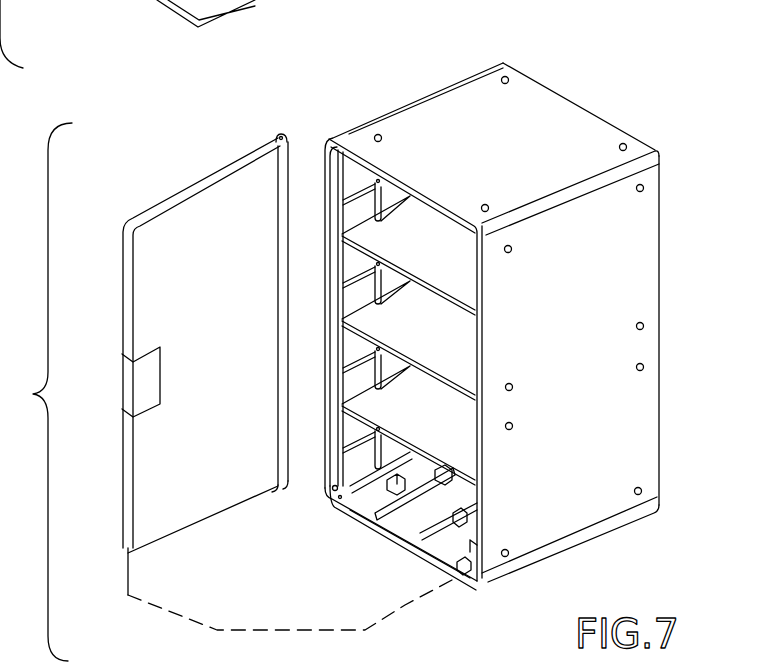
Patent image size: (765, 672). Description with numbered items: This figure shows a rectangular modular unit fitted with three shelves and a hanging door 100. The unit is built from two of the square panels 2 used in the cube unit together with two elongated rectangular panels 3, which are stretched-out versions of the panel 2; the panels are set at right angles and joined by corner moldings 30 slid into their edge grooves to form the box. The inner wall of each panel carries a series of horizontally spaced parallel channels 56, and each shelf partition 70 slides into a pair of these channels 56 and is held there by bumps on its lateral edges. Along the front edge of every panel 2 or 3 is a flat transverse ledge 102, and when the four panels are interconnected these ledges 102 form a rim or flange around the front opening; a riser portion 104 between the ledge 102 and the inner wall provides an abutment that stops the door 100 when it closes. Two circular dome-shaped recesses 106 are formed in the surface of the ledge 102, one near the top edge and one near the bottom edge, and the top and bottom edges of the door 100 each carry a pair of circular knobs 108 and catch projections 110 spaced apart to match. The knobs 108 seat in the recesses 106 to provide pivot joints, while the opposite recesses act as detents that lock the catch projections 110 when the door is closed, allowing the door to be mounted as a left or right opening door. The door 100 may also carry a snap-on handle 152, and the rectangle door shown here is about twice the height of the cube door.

The panel 2 is at (516, 148).
The elongated rectangular panel 3 is at (577, 443).
The corner molding 30 is at (455, 83).
The channel 56 is at (343, 202).
The shelf partition 70 is at (372, 238).
The hanging door 100 is at (252, 355).
The ledge 102 is at (400, 536).
The riser portion 104 is at (365, 505).
The recess 106 is at (332, 487).
The circular knob 108 is at (281, 133).
The catch projection 110 is at (125, 215).
The snap-on handle 152 is at (124, 380).